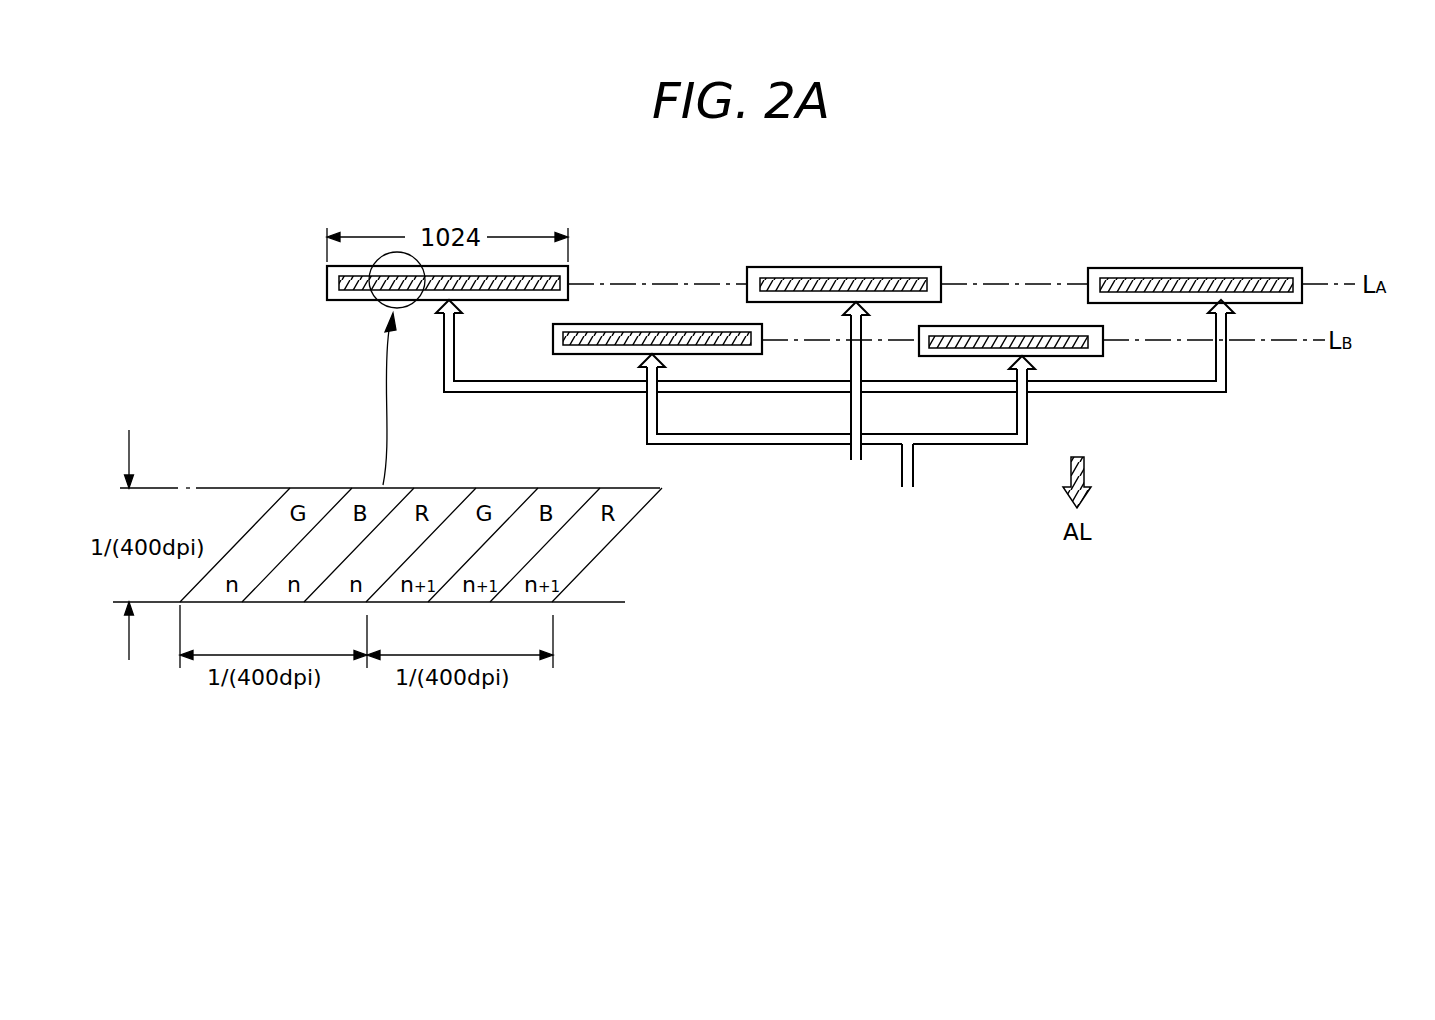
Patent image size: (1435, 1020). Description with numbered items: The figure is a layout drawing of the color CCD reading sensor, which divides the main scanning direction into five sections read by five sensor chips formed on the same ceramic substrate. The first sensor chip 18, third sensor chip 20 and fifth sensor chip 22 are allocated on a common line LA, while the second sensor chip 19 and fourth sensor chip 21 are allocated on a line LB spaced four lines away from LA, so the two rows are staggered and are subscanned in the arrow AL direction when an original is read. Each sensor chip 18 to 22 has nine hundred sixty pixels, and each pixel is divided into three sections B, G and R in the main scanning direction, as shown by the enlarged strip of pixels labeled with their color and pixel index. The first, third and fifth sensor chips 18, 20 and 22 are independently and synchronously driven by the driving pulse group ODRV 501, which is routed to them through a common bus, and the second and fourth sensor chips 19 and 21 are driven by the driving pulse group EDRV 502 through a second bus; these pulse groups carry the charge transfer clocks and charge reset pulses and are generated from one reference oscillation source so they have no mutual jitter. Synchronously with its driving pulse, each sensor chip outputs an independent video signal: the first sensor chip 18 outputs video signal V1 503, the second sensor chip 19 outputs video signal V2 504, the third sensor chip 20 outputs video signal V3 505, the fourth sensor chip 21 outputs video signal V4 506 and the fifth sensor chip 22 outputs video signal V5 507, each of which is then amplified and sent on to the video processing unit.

The first sensor chip 18 is at (568, 268).
The second sensor chip 19 is at (762, 329).
The third sensor chip 20 is at (910, 267).
The fourth sensor chip 21 is at (1103, 331).
The fifth sensor chip 22 is at (1255, 268).
The driving pulse group ODRV 501 is at (835, 408).
The driving pulse group EDRV 502 is at (837, 457).
The video signal V1 503 is at (327, 283).
The video signal V2 504 is at (553, 340).
The video signal V3 505 is at (747, 284).
The video signal V4 506 is at (919, 340).
The video signal V5 507 is at (1088, 284).